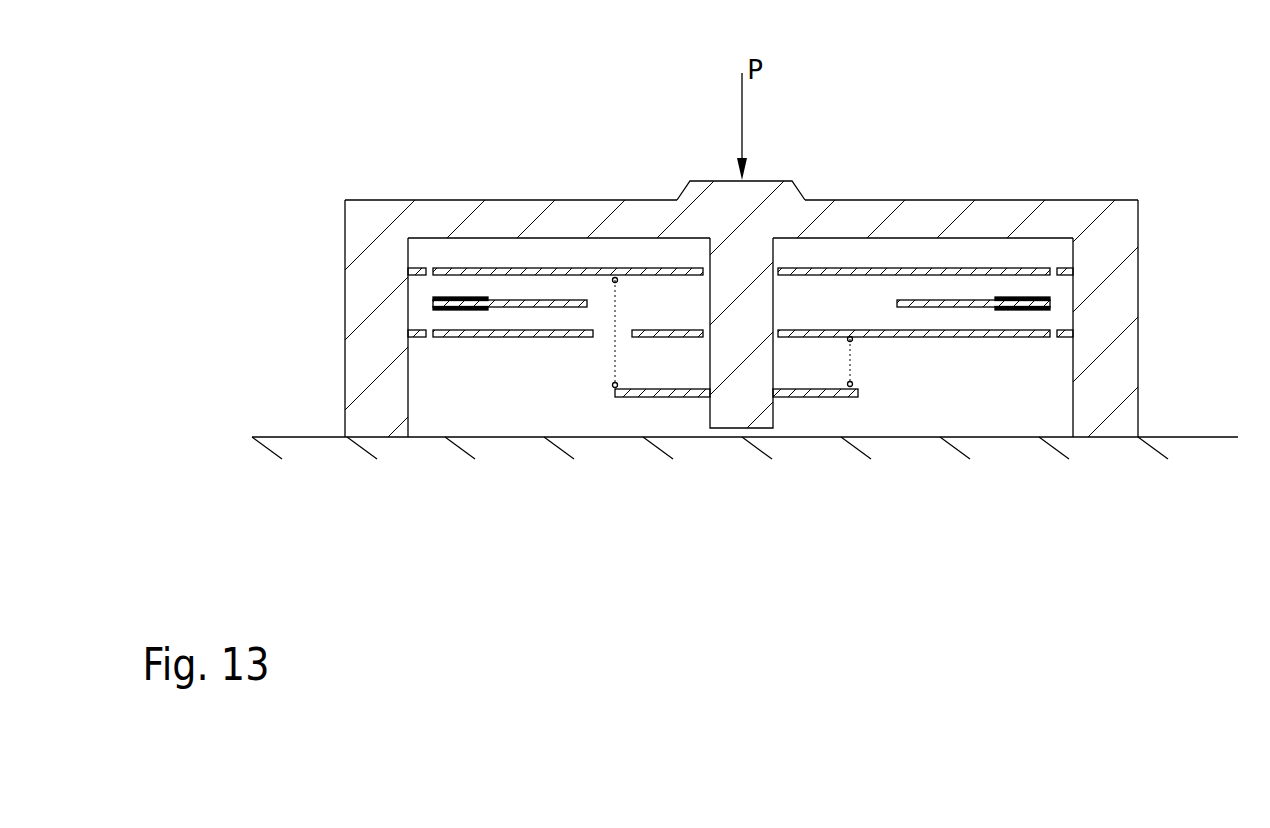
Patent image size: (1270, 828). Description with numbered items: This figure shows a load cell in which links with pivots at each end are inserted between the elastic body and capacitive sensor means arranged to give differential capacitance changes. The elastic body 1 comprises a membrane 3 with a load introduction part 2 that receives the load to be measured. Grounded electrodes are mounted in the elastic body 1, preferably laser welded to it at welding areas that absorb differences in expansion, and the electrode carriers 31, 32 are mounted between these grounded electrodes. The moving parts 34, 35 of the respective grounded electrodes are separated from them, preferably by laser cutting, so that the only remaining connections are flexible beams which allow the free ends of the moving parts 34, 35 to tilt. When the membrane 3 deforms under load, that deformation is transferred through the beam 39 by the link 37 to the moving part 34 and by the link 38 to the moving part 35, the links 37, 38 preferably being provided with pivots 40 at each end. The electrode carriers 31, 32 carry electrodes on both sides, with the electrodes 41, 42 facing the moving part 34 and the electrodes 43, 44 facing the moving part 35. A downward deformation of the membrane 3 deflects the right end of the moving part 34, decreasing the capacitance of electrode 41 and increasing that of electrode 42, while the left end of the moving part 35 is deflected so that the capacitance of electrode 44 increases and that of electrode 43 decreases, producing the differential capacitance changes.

The elastic body 1 is at (689, 260).
The load introduction part 2 is at (712, 248).
The membrane 3 is at (527, 210).
The electrode carrier 31 is at (510, 303).
The electrode carrier 32 is at (933, 299).
The moving part 34 is at (519, 337).
The moving part 35 is at (562, 268).
The link 37 is at (850, 367).
The link 38 is at (614, 362).
The beam 39 is at (641, 397).
The pivot 40 is at (618, 281).
The electrode 41 is at (1022, 309).
The electrode 42 is at (460, 309).
The electrode 43 is at (1023, 298).
The electrode 44 is at (460, 299).